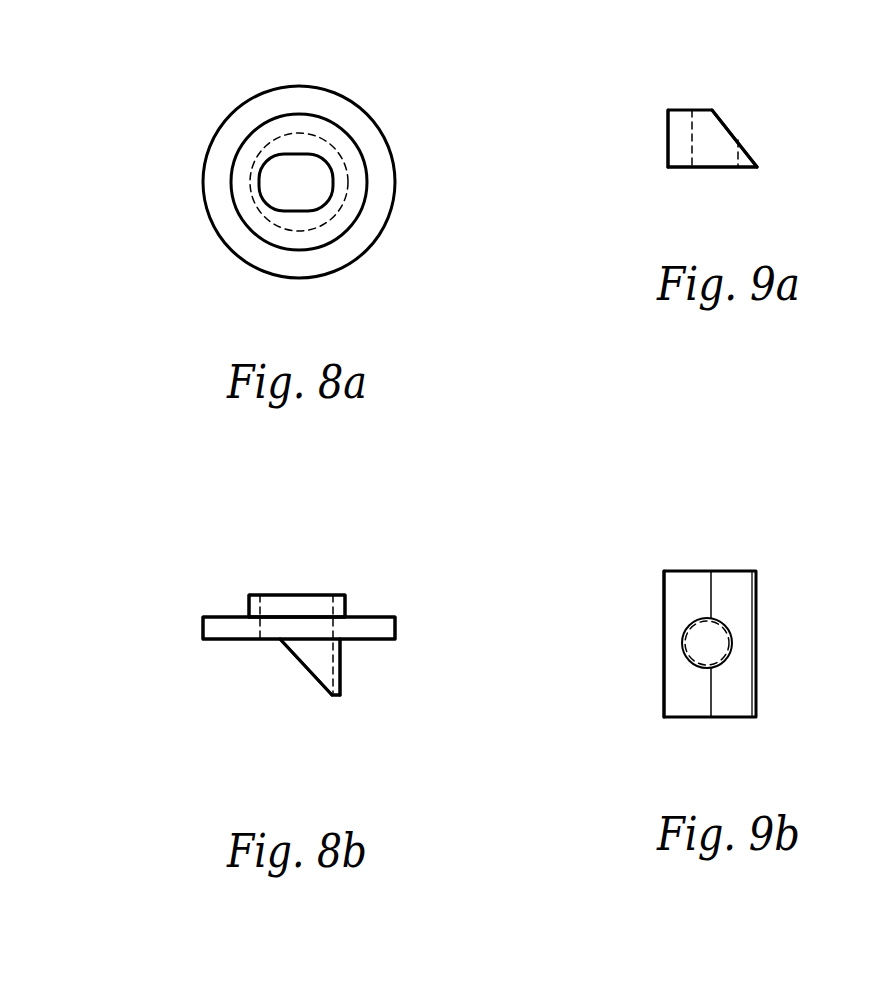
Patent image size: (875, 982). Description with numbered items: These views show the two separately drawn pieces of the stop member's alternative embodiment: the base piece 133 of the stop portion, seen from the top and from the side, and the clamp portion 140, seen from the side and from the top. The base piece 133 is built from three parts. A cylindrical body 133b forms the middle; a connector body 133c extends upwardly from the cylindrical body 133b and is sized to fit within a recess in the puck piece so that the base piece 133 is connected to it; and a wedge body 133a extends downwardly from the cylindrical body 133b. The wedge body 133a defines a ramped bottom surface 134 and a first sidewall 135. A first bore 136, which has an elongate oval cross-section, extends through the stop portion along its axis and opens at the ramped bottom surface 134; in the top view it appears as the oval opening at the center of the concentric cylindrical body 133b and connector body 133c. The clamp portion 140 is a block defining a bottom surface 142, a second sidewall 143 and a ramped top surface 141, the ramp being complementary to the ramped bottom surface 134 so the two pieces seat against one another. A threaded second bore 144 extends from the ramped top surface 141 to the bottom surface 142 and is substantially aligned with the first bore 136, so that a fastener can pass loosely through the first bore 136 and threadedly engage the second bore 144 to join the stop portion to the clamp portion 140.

In FIG. 8A, the base piece 133 is at (377, 73).
In FIG. 8B, the base piece 133 is at (408, 580).
In FIG. 8B, the wedge body 133a is at (342, 683).
In FIG. 8A, the cylindrical body 133b is at (387, 197).
In FIG. 8B, the cylindrical body 133b is at (395, 628).
In FIG. 8A, the connector body 133c is at (359, 162).
In FIG. 8B, the connector body 133c is at (339, 595).
In FIG. 8B, the ramped bottom surface 134 is at (295, 657).
In FIG. 8B, the first sidewall 135 is at (343, 663).
In FIG. 8A, the first bore 136 is at (280, 173).
In FIG. 8B, the first bore 136 is at (270, 594).
In FIG. 9A, the clamp portion 140 is at (776, 102).
In FIG. 9B, the clamp portion 140 is at (759, 536).
In FIG. 9A, the ramped top surface 141 is at (758, 156).
In FIG. 9B, the ramped top surface 141 is at (737, 710).
In FIG. 9A, the bottom surface 142 is at (671, 168).
In FIG. 9A, the second sidewall 143 is at (668, 125).
In FIG. 9B, the second sidewall 143 is at (664, 603).
In FIG. 9A, the second bore 144 is at (707, 110).
In FIG. 9B, the second bore 144 is at (692, 645).